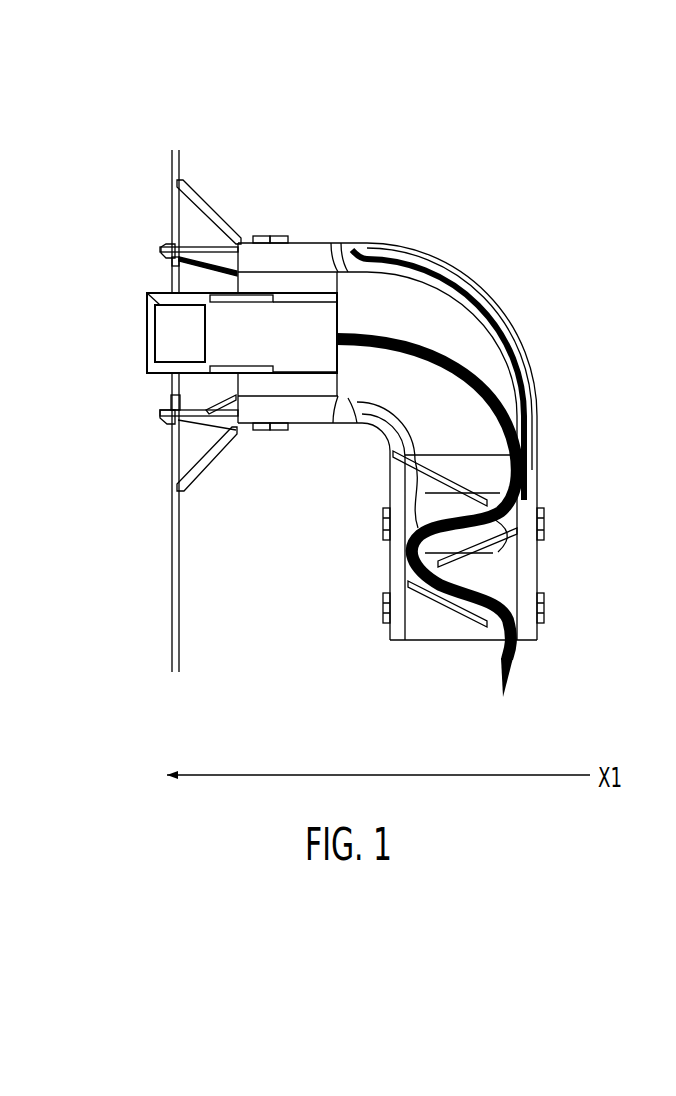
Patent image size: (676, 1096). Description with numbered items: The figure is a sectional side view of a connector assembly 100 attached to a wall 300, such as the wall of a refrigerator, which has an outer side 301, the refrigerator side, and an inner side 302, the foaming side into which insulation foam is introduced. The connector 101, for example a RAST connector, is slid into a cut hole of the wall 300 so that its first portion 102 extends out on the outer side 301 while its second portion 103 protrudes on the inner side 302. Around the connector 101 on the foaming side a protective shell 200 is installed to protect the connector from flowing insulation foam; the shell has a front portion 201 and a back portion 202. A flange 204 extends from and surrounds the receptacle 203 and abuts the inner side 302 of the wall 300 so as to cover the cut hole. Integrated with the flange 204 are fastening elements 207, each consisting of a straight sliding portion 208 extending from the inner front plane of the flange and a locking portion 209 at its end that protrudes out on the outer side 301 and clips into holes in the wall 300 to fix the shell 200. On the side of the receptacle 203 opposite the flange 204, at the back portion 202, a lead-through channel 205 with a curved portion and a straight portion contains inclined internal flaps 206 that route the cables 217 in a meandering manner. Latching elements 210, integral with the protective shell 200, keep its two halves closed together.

The connector assembly 100 is at (163, 314).
The connector 101 is at (201, 327).
The first portion 102 is at (145, 338).
The second portion 103 is at (293, 347).
The protective shell 200 is at (455, 432).
The front portion 201 is at (321, 377).
The back portion 202 is at (487, 575).
The receptacle 203 is at (317, 233).
The flange 204 is at (215, 210).
The lead-through channel 205 is at (545, 385).
The flap 206 is at (432, 612).
The fastening element 207 is at (155, 408).
The straight sliding portion 208 is at (223, 420).
The locking portion 209 is at (160, 422).
The latching element 210 is at (548, 524).
The cable 217 is at (446, 518).
The wall 300 is at (173, 429).
The outer side 301 is at (146, 411).
The inner side 302 is at (202, 411).